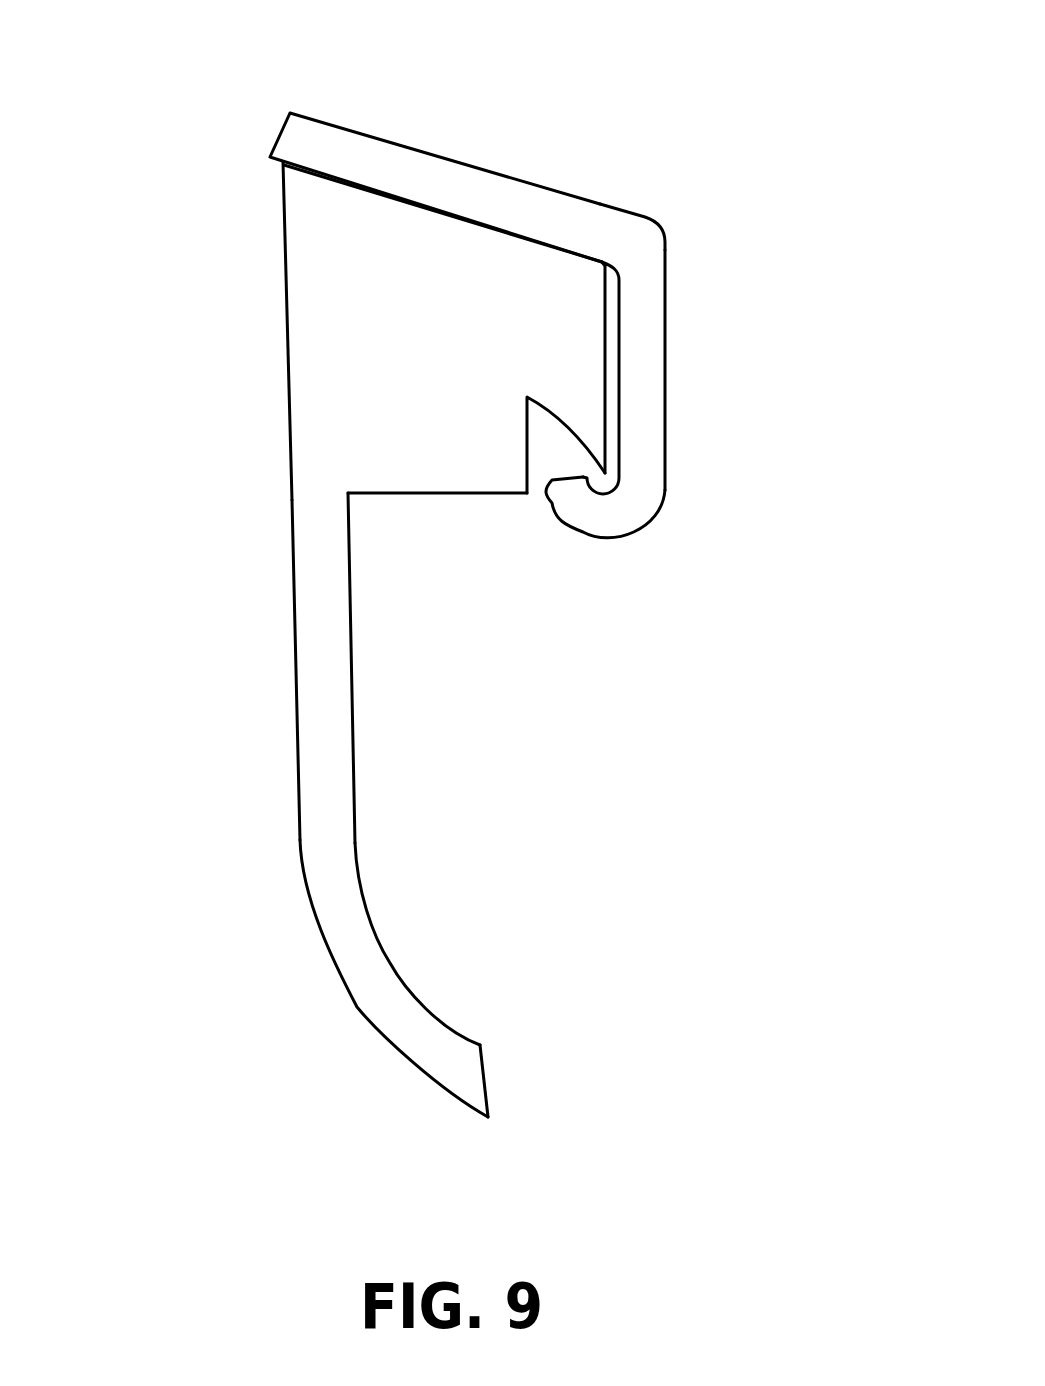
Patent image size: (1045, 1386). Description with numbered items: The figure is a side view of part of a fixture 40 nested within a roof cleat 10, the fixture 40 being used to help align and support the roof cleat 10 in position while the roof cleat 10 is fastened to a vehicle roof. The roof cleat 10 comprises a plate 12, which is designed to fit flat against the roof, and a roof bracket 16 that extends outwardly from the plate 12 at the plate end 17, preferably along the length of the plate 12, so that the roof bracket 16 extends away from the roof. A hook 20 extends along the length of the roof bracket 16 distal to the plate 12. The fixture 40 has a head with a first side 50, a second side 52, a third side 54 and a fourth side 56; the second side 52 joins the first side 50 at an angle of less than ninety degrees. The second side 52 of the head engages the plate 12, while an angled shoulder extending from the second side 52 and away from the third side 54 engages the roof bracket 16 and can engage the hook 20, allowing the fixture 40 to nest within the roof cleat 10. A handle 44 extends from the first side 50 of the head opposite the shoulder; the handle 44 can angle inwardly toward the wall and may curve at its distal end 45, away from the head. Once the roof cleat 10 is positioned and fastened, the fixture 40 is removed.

The roof cleat 10 is at (570, 192).
The plate 12 is at (352, 157).
The roof bracket 16 is at (638, 368).
The plate end 17 is at (652, 298).
The hook 20 is at (583, 535).
The fixture 40 is at (290, 431).
The handle 44 is at (297, 762).
The distal end 45 is at (487, 1074).
The first side 50 is at (285, 330).
The second side 52 is at (437, 207).
The third side 54 is at (527, 495).
The fourth side 56 is at (418, 494).